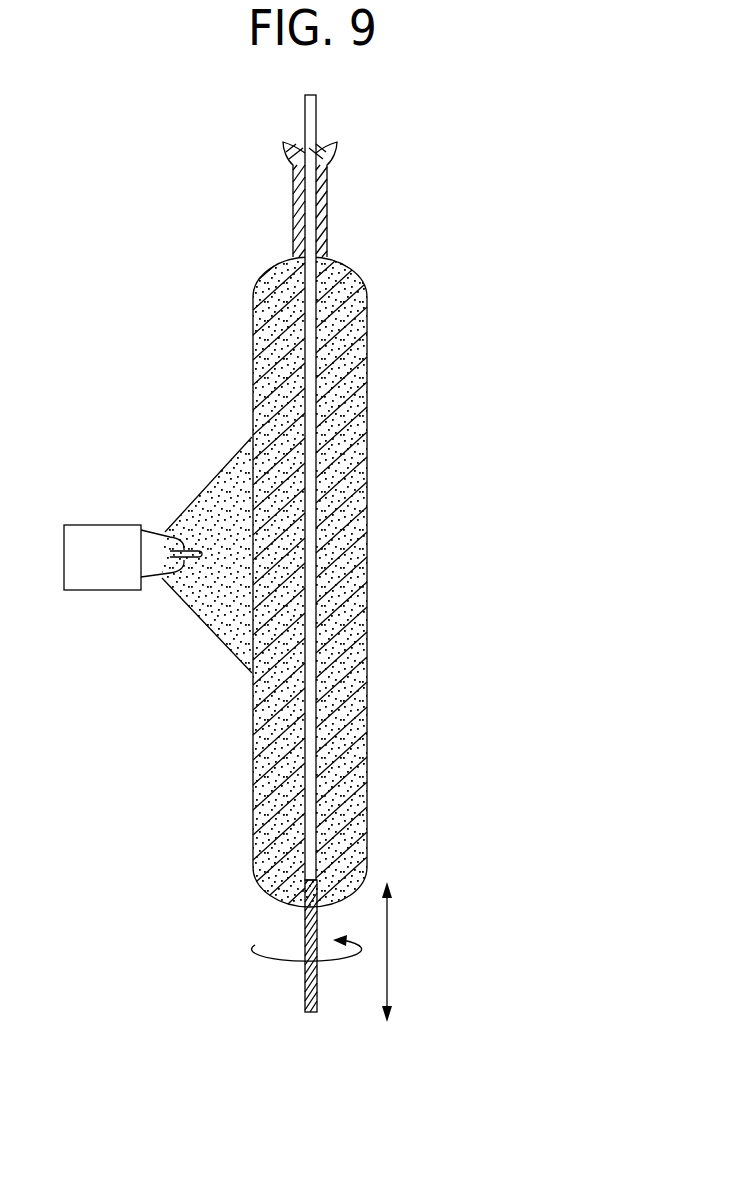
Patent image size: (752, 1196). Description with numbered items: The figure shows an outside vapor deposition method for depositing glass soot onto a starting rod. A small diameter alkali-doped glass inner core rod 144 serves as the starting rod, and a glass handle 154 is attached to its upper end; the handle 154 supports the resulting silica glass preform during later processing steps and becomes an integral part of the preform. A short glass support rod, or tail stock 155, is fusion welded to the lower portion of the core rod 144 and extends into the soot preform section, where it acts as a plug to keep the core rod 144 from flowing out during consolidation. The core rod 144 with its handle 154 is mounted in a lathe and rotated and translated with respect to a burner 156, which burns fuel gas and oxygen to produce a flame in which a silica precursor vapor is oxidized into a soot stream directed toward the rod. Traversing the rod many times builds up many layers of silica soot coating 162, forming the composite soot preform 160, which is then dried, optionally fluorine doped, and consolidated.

The alkali-doped glass inner core rod 144 is at (316, 100).
The glass handle 154 is at (327, 188).
The tail stock 155 is at (305, 972).
The burner 156 is at (105, 525).
The composite soot preform 160 is at (359, 559).
The soot coating 162 is at (367, 570).